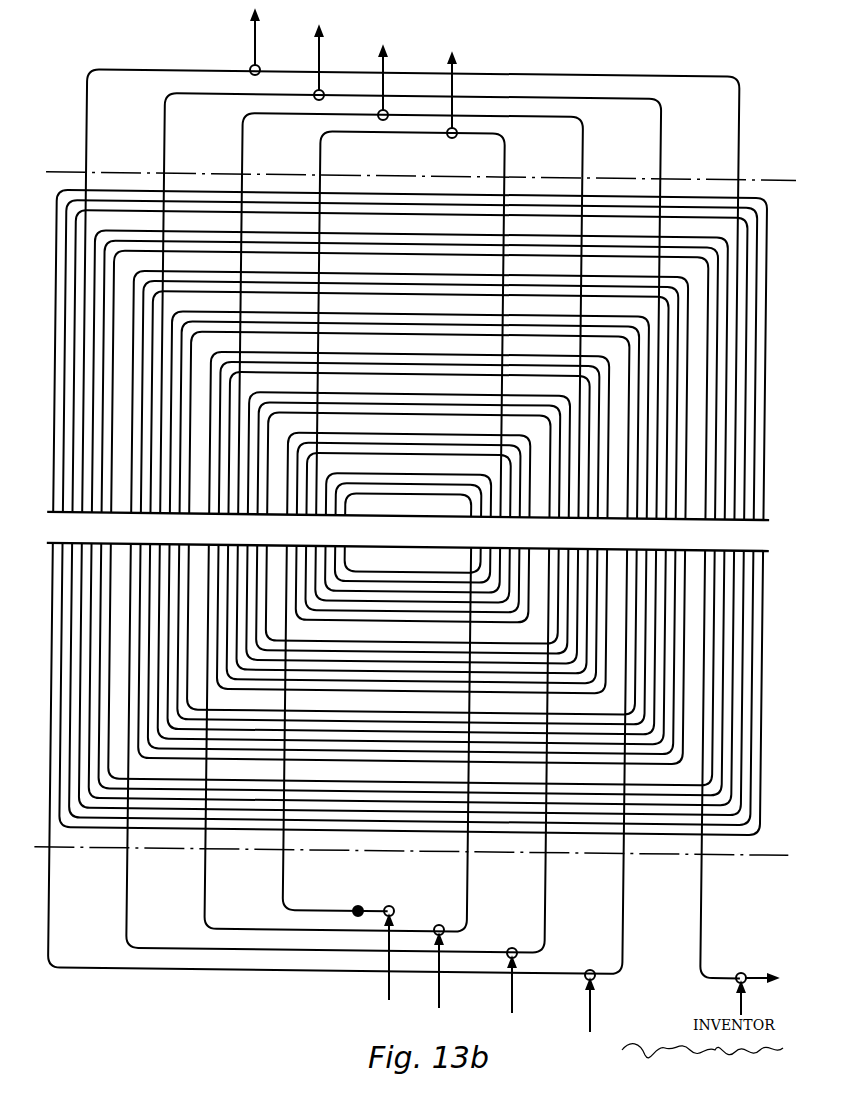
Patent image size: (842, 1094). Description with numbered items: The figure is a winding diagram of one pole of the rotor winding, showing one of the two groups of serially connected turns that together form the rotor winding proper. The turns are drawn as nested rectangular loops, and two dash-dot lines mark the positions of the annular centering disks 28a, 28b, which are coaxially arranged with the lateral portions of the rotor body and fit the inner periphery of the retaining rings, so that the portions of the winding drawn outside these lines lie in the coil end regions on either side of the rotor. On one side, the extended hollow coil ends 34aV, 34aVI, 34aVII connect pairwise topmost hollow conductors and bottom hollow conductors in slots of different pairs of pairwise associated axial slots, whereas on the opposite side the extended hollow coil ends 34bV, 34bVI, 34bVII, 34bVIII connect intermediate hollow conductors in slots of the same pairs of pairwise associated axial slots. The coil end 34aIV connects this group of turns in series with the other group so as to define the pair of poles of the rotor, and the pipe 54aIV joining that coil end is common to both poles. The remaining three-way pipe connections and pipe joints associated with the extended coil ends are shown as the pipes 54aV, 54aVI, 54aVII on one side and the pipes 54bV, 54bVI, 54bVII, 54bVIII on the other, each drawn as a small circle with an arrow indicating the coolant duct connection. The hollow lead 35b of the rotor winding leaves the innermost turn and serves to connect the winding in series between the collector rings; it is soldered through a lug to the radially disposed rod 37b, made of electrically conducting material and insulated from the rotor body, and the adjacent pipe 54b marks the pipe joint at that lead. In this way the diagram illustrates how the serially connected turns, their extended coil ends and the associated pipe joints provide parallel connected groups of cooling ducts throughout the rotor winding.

The annular centering disk 28a is at (721, 860).
The annular centering disk 28b is at (722, 183).
The coil end 34aIV is at (702, 886).
The extended hollow coil end 34aV is at (66, 880).
The extended hollow coil end 34aVI is at (146, 880).
The extended hollow coil end 34aVII is at (224, 880).
The extended hollow coil end 34bV is at (321, 130).
The extended hollow coil end 34bVI is at (245, 128).
The extended hollow coil end 34bVII is at (165, 128).
The extended hollow coil end 34bVIII is at (86, 128).
The hollow lead 35b is at (287, 890).
The radially disposed rod 37b is at (357, 906).
The terminal 54b is at (392, 906).
The pipe 54aIV is at (739, 974).
The pipe 54aV is at (596, 972).
The pipe 54aVI is at (517, 950).
The pipe 54aVII is at (443, 927).
The pipe 54bV is at (453, 128).
The pipe 54bVI is at (384, 110).
The pipe 54bVII is at (319, 90).
The pipe 54bVIII is at (250, 65).